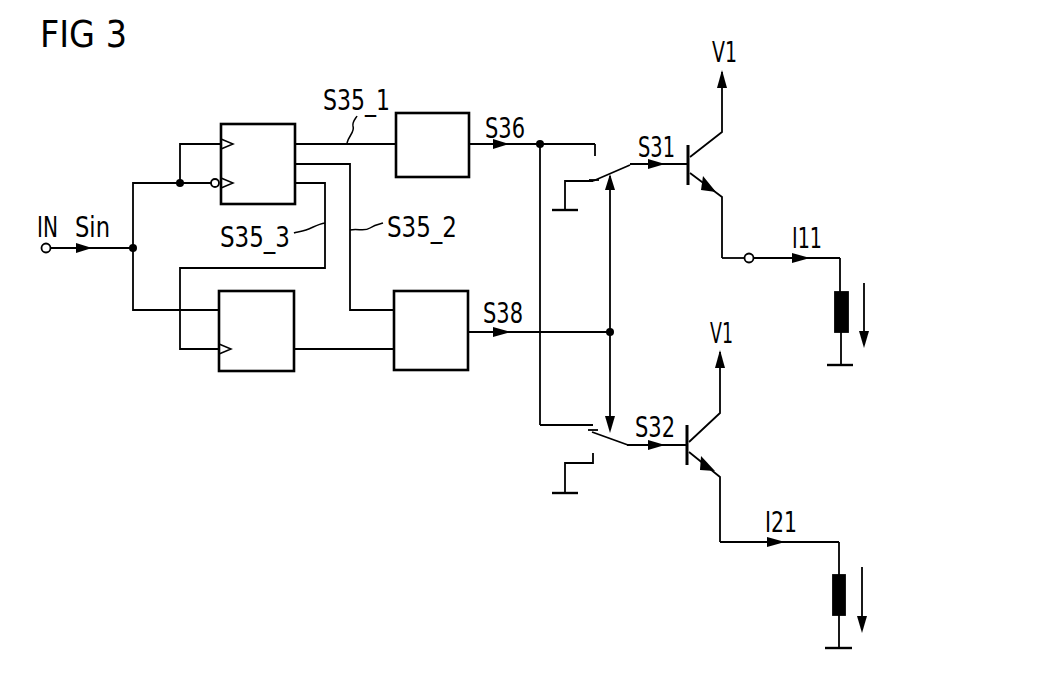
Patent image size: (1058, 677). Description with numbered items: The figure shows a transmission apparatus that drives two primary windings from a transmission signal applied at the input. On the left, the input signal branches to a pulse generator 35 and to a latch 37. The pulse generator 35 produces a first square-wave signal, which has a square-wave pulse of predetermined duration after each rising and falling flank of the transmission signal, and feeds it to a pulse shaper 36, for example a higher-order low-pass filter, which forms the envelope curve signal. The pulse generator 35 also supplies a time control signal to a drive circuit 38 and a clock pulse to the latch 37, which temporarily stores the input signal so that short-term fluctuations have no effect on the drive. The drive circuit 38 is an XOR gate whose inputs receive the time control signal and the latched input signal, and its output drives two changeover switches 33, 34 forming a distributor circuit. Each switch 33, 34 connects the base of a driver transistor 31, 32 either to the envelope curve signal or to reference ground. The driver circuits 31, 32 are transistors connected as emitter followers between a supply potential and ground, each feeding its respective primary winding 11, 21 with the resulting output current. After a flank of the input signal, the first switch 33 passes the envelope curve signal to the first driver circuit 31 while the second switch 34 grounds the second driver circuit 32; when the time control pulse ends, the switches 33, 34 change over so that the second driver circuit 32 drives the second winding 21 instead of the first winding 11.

The first primary winding 11 is at (835, 312).
The second primary winding 21 is at (833, 595).
The first driver circuit 31 is at (693, 158).
The second driver circuit 32 is at (693, 443).
The first changeover switch 33 is at (617, 170).
The second changeover switch 34 is at (617, 445).
The pulse generator 35 is at (258, 124).
The pulse shaper 36 is at (433, 112).
The latch 37 is at (255, 372).
The drive circuit 38 is at (430, 372).